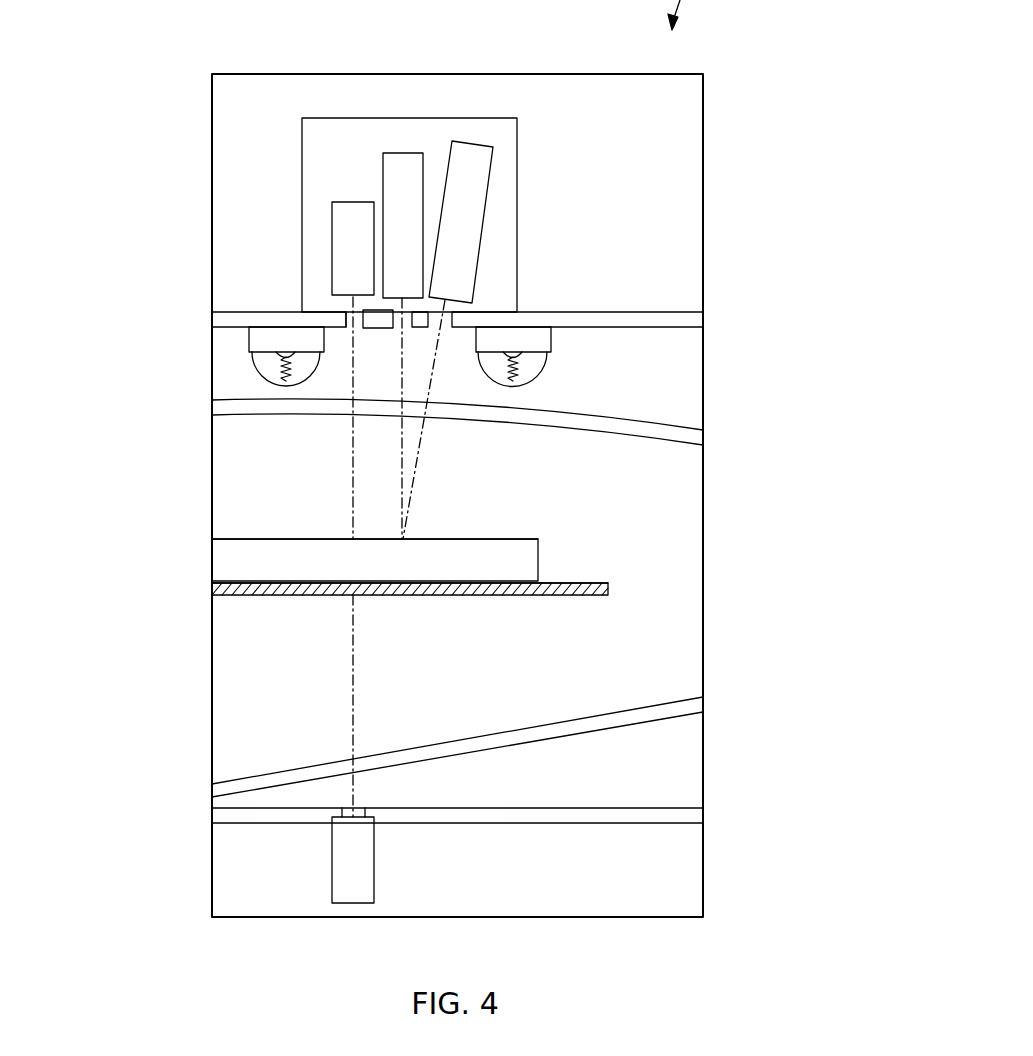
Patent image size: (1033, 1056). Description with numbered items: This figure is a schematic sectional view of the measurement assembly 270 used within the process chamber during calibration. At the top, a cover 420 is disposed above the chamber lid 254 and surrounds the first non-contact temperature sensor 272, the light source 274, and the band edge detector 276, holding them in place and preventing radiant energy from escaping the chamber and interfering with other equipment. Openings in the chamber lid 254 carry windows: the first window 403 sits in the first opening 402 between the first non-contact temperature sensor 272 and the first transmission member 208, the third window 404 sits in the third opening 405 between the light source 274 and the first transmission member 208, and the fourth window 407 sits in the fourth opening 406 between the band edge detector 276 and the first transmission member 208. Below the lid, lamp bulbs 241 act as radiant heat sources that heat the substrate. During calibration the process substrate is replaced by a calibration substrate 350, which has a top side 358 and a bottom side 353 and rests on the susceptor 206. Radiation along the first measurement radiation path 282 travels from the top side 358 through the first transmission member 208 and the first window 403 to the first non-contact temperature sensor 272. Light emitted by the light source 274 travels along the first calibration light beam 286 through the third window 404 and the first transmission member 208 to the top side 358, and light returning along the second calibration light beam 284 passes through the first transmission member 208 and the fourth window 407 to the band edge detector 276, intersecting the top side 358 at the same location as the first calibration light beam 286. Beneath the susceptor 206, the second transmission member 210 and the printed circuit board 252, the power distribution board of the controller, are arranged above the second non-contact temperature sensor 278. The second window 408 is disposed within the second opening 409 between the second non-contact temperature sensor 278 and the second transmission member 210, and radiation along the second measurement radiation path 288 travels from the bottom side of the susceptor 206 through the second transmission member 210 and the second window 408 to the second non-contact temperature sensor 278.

The measurement assembly 270 is at (340, 108).
The cover 420 is at (507, 163).
The first non-contact temperature sensor 272 is at (334, 254).
The light source 274 is at (384, 205).
The band edge detector 276 is at (444, 206).
The chamber lid 254 is at (630, 317).
The first opening 402 is at (336, 322).
The first window 403 is at (360, 297).
The third window 404 is at (402, 330).
The third opening 405 is at (408, 309).
The fourth opening 406 is at (438, 309).
The fourth window 407 is at (448, 327).
The lamp bulb 241 is at (262, 372).
The first transmission member 208 is at (220, 410).
The first measurement radiation path 282 is at (352, 493).
The second calibration light beam 284 is at (420, 437).
The first calibration light beam 286 is at (400, 419).
The second measurement radiation path 288 is at (354, 705).
The calibration substrate 350 is at (222, 562).
The top side 358 is at (510, 539).
The susceptor 206 is at (493, 595).
The bottom side 353 is at (407, 583).
The second transmission member 210 is at (258, 781).
The printed circuit board 252 is at (478, 816).
The second window 408 is at (362, 810).
The second non-contact temperature sensor 278 is at (342, 866).
The second opening 409 is at (350, 828).